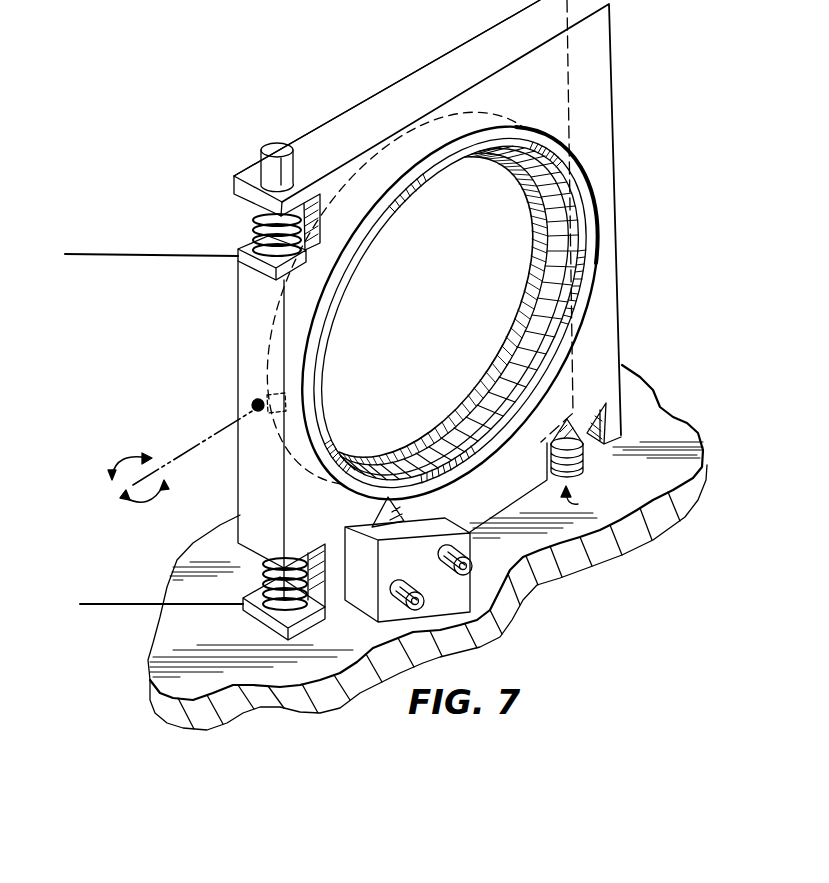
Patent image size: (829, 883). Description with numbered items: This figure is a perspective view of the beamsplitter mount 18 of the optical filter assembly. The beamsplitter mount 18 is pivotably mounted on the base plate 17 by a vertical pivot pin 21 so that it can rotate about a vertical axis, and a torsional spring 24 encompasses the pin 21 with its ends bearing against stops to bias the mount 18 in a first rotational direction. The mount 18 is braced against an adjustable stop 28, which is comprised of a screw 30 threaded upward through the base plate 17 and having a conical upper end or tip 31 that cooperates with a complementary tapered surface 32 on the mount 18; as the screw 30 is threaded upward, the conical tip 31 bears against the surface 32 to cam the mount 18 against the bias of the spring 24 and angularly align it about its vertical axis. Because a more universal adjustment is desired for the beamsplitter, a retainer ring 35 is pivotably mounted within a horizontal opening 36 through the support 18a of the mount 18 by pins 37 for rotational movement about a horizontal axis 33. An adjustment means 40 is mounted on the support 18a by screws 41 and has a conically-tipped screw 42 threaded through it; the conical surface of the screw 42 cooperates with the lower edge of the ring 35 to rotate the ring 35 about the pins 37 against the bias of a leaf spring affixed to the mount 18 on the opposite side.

The base plate 17 is at (683, 444).
The beamsplitter mount 18 is at (613, 98).
The support 18a is at (442, 68).
The vertical pivot pin 21 is at (268, 152).
The torsional spring 24 is at (127, 254).
The adjustable stop 28 is at (582, 500).
The screw 30 is at (588, 461).
The conical tip 31 is at (608, 423).
The tapered surface 32 is at (575, 421).
The horizontal axis 33 is at (123, 447).
The retainer ring 35 is at (560, 338).
The horizontal opening 36 is at (510, 128).
The pin 37 is at (599, 206).
The adjustment means 40 is at (433, 593).
The screw 41 is at (460, 574).
The conically-tipped screw 42 is at (394, 530).